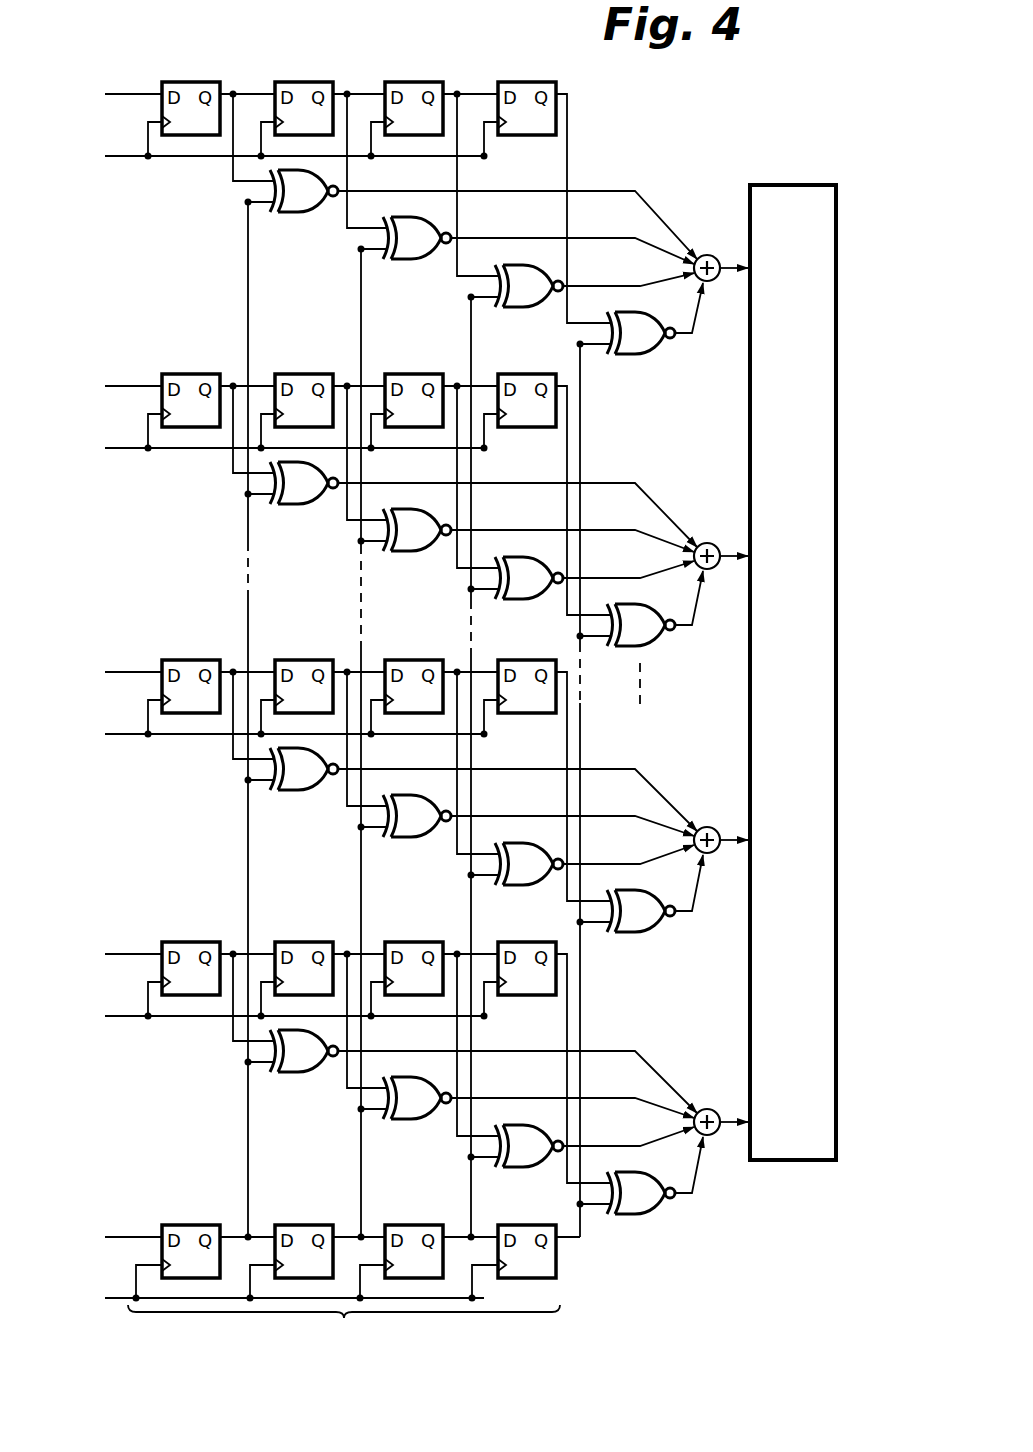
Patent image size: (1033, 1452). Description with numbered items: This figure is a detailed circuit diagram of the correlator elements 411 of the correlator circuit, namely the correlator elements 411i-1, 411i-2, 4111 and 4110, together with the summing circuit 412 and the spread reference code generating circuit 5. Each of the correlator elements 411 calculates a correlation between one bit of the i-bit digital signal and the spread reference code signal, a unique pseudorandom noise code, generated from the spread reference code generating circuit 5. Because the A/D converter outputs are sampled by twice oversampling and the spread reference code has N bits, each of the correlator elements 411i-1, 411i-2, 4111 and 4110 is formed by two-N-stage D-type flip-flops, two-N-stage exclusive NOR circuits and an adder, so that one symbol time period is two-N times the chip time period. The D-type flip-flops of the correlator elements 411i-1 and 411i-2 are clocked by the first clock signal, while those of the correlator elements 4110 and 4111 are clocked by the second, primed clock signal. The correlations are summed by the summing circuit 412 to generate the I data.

The correlator elements 411 is at (578, 73).
The correlator element 411i-1 is at (220, 238).
The correlator element 411i-2 is at (220, 525).
The correlator element 4111 is at (220, 810).
The correlator element 4110 is at (220, 1090).
The summing circuit 412 is at (774, 185).
The spread reference code generating circuit 5 is at (582, 1262).